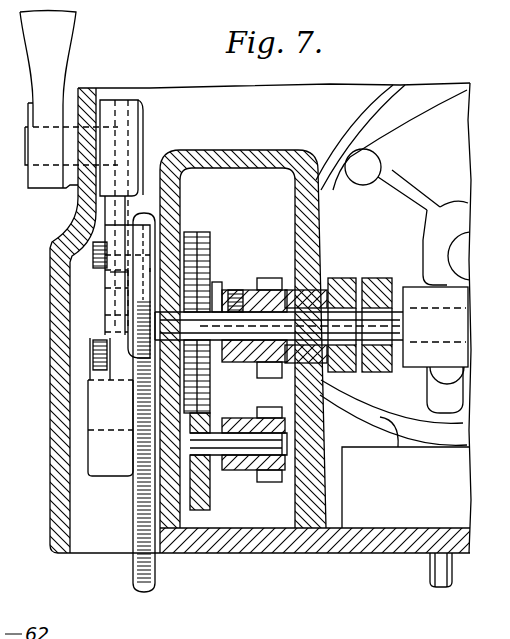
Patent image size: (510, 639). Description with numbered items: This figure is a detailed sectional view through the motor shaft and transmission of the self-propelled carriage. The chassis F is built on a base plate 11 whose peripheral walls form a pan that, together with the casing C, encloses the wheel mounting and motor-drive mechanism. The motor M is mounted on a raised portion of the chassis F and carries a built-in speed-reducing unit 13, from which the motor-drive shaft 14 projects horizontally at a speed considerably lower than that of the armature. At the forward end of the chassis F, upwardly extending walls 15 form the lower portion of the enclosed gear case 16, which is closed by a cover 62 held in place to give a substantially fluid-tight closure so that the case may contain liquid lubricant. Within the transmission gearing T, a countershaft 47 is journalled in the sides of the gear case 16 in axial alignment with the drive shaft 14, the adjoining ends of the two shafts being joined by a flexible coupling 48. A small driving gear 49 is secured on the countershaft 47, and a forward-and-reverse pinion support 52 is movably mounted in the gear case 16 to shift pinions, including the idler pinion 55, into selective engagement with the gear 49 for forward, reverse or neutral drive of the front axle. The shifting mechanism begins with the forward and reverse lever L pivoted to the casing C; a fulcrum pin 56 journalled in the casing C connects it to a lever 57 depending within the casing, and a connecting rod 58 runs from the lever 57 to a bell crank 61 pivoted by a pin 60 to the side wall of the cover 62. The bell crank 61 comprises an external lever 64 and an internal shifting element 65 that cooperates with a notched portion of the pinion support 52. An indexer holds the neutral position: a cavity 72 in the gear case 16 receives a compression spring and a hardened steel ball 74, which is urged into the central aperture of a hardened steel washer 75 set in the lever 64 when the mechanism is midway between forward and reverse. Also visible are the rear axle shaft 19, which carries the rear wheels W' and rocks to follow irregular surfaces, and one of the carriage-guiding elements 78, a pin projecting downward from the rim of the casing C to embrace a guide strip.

The base plate 11 is at (328, 548).
The speed-reducing unit 13 is at (417, 353).
The motor-drive shaft 14 is at (393, 320).
The upwardly extending walls 15 is at (315, 497).
The gear case 16 is at (305, 223).
The rear axle shaft 19 is at (88, 408).
The countershaft 47 is at (242, 338).
The flexible coupling 48 is at (368, 281).
The small driving gear 49 is at (270, 372).
The forward-and-reverse pinion support 52 is at (202, 499).
The idler pinion 55 is at (271, 487).
The fulcrum pin 56 is at (144, 123).
The lever 57 is at (112, 204).
The connecting rod 58 is at (92, 254).
The pin 60 is at (194, 246).
The bell crank 61 is at (102, 315).
The cover 62 is at (228, 152).
The lever 64 is at (110, 288).
The shifting element 65 is at (218, 283).
The cavity 72 is at (100, 309).
The hardened steel ball 74 is at (102, 331).
The hardened steel washer 75 is at (118, 273).
The carriage-guiding elements 78 is at (434, 572).
The casing C is at (46, 481).
The chassis F is at (252, 553).
The forward and reverse lever L is at (70, 36).
The motor M is at (399, 266).
The transmission gearing T is at (265, 274).
The rear wheels W' is at (154, 375).